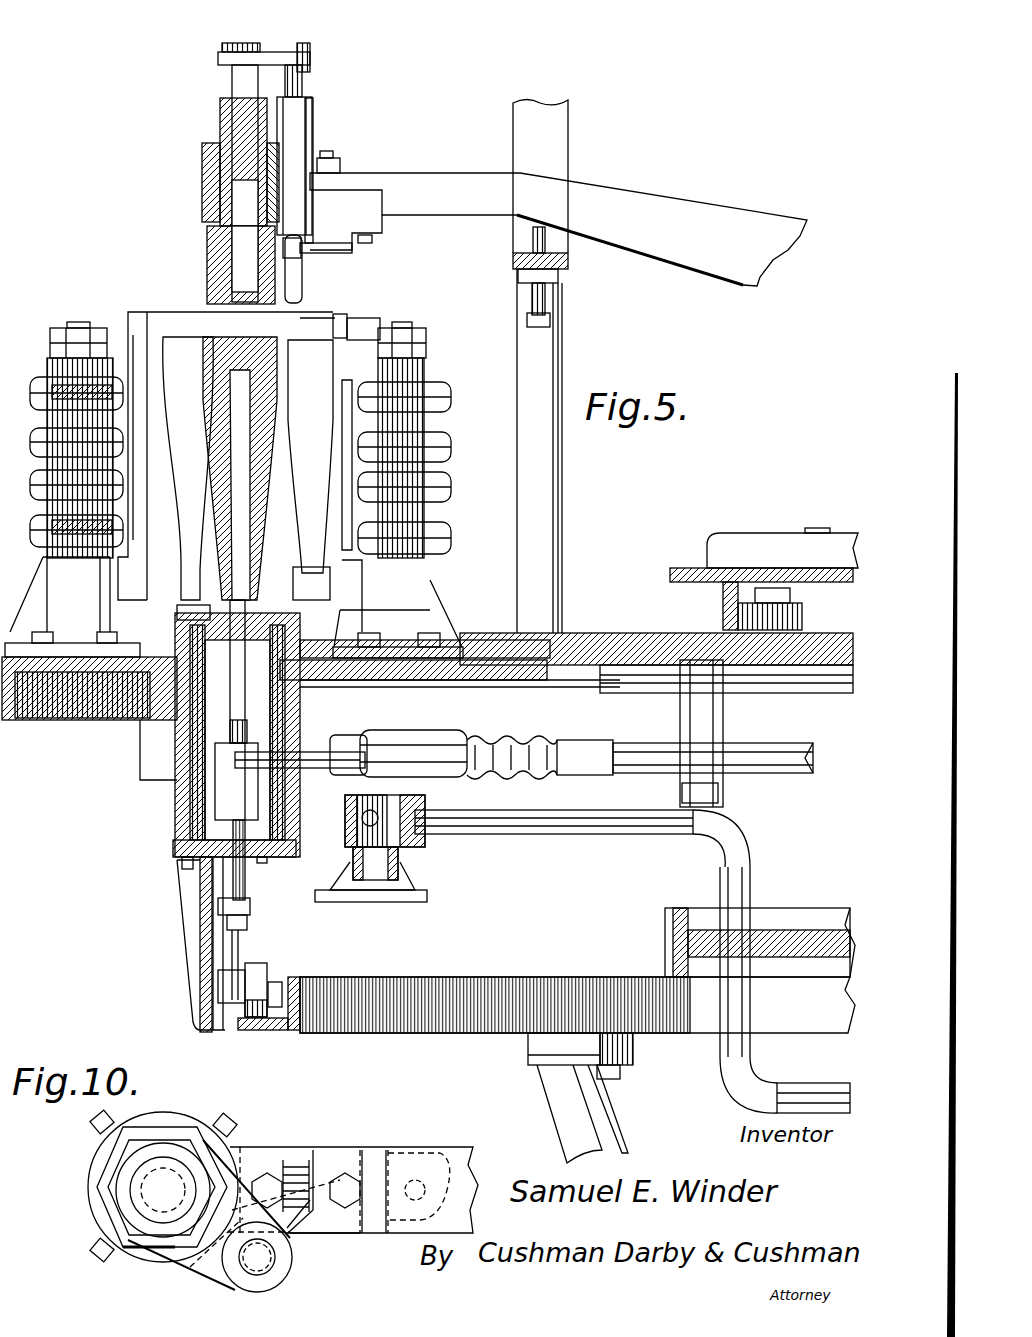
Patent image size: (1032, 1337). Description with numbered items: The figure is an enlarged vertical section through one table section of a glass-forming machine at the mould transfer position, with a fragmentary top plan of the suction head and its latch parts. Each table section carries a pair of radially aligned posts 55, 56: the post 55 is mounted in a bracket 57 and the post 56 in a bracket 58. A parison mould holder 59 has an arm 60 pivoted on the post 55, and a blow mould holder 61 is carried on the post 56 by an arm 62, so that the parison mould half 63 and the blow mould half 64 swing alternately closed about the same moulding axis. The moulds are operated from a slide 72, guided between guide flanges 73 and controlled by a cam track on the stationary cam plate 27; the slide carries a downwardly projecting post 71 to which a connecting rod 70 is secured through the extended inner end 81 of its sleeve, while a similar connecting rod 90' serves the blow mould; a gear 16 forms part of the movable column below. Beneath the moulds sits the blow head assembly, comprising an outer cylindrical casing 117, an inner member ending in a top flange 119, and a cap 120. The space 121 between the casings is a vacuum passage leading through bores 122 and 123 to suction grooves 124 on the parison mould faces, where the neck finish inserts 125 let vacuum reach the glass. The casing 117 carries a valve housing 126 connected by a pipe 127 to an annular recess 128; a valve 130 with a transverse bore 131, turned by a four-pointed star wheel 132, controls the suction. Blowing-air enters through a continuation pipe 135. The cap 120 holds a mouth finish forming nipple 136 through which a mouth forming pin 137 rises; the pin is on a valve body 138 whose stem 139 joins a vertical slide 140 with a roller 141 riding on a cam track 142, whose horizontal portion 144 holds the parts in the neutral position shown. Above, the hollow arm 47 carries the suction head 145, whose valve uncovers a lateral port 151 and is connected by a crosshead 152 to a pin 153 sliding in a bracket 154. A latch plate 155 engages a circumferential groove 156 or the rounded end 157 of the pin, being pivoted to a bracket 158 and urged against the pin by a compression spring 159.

In FIG. 5, the intermediate gear 16 is at (668, 947).
In FIG. 5, the stationary cam plate 27 is at (765, 542).
In FIG. 5, the hollow arm 47 is at (703, 208).
In FIG. 10, the hollow arm 47 is at (447, 1152).
In FIG. 5, the post 55 is at (45, 352).
In FIG. 5, the post 56 is at (436, 352).
In FIG. 5, the bracket 57 is at (48, 598).
In FIG. 5, the bracket 58 is at (372, 598).
In FIG. 5, the parison mould holder 59 is at (128, 322).
In FIG. 5, the arm 60 is at (36, 390).
In FIG. 5, the blow mould holder 61 is at (360, 323).
In FIG. 5, the arm 62 is at (446, 395).
In FIG. 5, the parison mould half 63 is at (165, 300).
In FIG. 5, the blow mould half 64 is at (340, 318).
In FIG. 5, the connecting rod 70 is at (433, 750).
In FIG. 5, the downwardly projecting post 71 is at (690, 712).
In FIG. 5, the slide 72 is at (630, 640).
In FIG. 5, the guide flange 73 is at (755, 615).
In FIG. 5, the extended inner end of sleeve 81 is at (603, 782).
In FIG. 5, the connecting rod 90' is at (713, 745).
In FIG. 5, the outer cylindrical casing 117 is at (190, 832).
In FIG. 5, the top flange 119 is at (108, 716).
In FIG. 5, the cap 120 is at (142, 718).
In FIG. 5, the space 121 is at (320, 696).
In FIG. 5, the bore 122 is at (320, 640).
In FIG. 5, the bore 123 is at (312, 618).
In FIG. 5, the suction groove 124 is at (176, 522).
In FIG. 5, the neck finish insert 125 is at (400, 540).
In FIG. 5, the valve housing 126 is at (300, 840).
In FIG. 5, the pipe 127 is at (548, 836).
In FIG. 5, the annular recess 128 is at (200, 848).
In FIG. 5, the valve 130 is at (345, 858).
In FIG. 5, the transverse bore 131 is at (412, 832).
In FIG. 5, the four-pointed star wheel 132 is at (415, 905).
In FIG. 5, the continuation pipe 135 is at (322, 734).
In FIG. 5, the mouth finish forming nipple 136 is at (285, 565).
In FIG. 5, the mouth forming pin 137 is at (187, 725).
In FIG. 5, the valve body 138 is at (220, 794).
In FIG. 5, the stem 139 is at (235, 872).
In FIG. 5, the vertical slide 140 is at (203, 947).
In FIG. 5, the roller 141 is at (260, 972).
In FIG. 5, the cam track 142 is at (244, 1032).
In FIG. 5, the horizontal portion 144 is at (292, 1033).
In FIG. 5, the suction head 145 is at (210, 278).
In FIG. 5, the lateral port 151 is at (250, 192).
In FIG. 5, the crosshead 152 is at (260, 52).
In FIG. 10, the crosshead 152 is at (212, 1268).
In FIG. 5, the pin 153 is at (293, 86).
In FIG. 5, the bracket 154 is at (290, 196).
In FIG. 5, the latch plate 155 is at (326, 242).
In FIG. 10, the latch plate 155 is at (330, 1240).
In FIG. 5, the circumferential groove 156 is at (303, 258).
In FIG. 5, the rounded end 157 is at (300, 316).
In FIG. 5, the bracket 158 is at (385, 226).
In FIG. 10, the compression spring 159 is at (305, 1160).